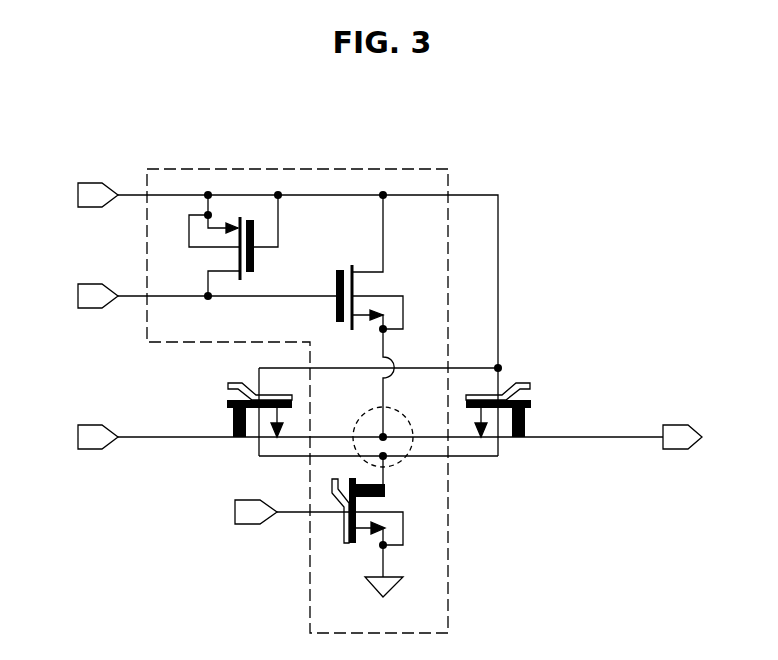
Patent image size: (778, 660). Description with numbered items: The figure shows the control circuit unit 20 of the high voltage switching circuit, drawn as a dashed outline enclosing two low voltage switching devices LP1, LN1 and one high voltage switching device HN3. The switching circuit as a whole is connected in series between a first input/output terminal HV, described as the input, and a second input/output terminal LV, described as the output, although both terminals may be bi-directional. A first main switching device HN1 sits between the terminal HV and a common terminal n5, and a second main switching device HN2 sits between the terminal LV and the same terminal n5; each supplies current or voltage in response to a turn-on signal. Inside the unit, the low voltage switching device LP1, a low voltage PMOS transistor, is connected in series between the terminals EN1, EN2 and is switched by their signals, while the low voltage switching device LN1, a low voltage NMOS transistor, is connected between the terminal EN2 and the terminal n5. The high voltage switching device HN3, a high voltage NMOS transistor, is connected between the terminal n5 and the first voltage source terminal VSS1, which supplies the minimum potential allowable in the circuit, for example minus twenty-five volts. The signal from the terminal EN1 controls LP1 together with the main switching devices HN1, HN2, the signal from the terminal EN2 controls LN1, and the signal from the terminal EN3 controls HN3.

The control circuit unit 20 is at (440, 169).
The low voltage switching device LP1 is at (221, 245).
The low voltage switching device LN1 is at (385, 262).
The first main switching device HN1 is at (247, 404).
The second main switching device HN2 is at (512, 395).
The high voltage switching device HN3 is at (384, 500).
The terminal ns n5 is at (388, 427).
The terminal EN1 is at (263, 319).
The terminal EN2 is at (183, 297).
The terminal EN3 is at (270, 513).
The first input/output terminal HV is at (209, 438).
The second input/output terminal LV is at (560, 439).
The first voltage source terminal VSS1 is at (385, 588).